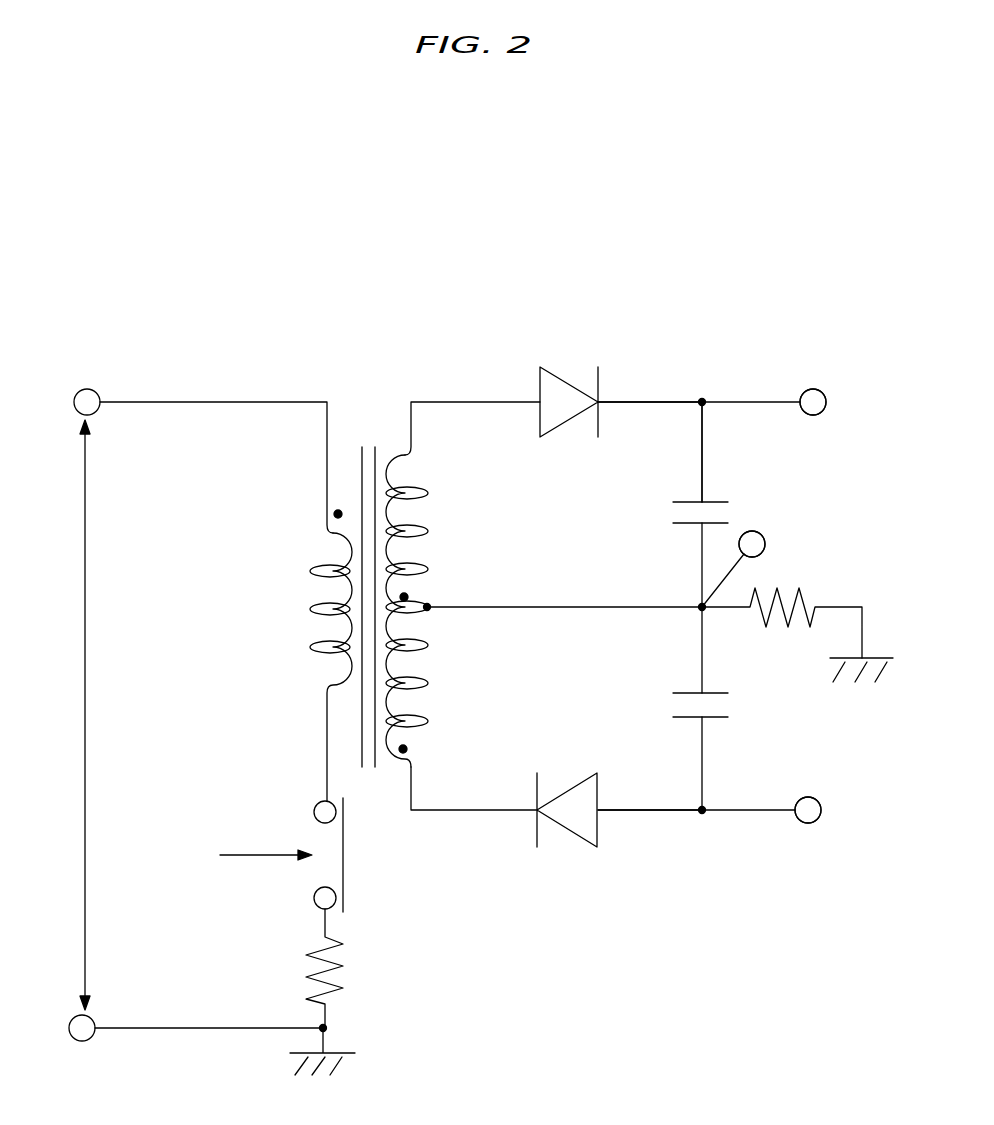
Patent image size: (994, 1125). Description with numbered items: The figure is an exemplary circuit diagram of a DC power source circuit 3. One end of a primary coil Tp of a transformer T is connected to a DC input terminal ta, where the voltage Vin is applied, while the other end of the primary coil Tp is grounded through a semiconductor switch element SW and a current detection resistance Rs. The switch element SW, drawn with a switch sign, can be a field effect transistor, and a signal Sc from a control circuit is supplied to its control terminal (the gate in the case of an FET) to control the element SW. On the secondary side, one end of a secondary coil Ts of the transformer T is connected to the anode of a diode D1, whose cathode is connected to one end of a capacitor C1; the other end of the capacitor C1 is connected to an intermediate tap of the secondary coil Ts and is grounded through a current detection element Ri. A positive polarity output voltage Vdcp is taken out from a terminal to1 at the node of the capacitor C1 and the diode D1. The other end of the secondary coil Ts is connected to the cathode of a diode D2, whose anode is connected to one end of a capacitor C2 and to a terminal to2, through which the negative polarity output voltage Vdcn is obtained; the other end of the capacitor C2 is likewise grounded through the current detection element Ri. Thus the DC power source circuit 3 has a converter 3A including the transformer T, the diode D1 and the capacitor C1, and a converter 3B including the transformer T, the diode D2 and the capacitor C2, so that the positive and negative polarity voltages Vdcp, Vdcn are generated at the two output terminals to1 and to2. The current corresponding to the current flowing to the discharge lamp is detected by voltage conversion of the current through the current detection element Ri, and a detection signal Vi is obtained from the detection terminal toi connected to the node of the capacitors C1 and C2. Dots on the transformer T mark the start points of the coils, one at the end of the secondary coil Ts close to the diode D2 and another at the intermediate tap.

The DC power source circuit 3 is at (805, 216).
The DC input terminal ta is at (92, 389).
The voltage Vin is at (180, 730).
The transformer T is at (418, 331).
The primary coil Tp is at (346, 537).
The secondary coil Ts is at (398, 462).
The diode D1 is at (578, 360).
The diode D2 is at (583, 778).
The converter 3A is at (572, 535).
The converter 3B is at (572, 684).
The capacitor C1 is at (690, 502).
The capacitor C2 is at (690, 693).
The positive polarity output voltage Vdcp is at (839, 386).
The terminal to1 is at (827, 402).
The negative polarity output voltage Vdcn is at (835, 827).
The terminal to2 is at (822, 810).
The detection terminal toi is at (757, 531).
The detection signal Vi is at (765, 548).
The current detection element Ri is at (805, 596).
The semiconductor switch element SW is at (354, 855).
The signal Sc is at (248, 857).
The current detection resistance Rs is at (343, 984).